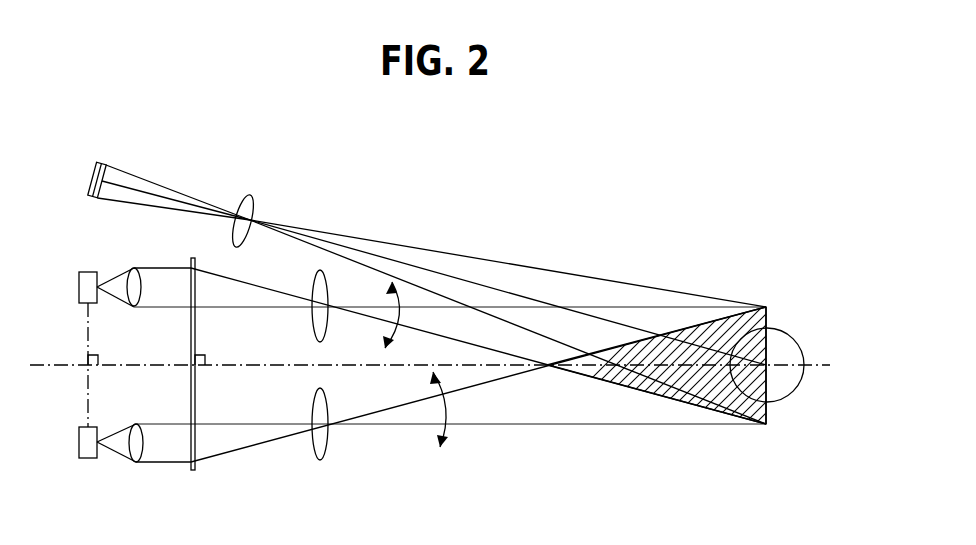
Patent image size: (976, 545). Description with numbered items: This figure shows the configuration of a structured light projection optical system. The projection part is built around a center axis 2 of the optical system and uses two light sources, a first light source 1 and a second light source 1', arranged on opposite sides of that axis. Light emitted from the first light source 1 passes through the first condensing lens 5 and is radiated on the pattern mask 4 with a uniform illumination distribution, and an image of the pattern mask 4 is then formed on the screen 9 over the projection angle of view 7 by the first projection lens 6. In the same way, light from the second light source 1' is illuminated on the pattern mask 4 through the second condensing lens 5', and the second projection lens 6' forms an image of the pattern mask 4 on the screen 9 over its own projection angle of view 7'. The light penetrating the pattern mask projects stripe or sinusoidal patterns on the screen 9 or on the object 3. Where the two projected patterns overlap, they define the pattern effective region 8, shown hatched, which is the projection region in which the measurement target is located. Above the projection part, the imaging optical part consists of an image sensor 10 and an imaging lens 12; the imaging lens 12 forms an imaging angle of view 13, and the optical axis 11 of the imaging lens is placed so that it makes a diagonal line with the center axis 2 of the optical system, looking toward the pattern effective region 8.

The first light source 1 is at (88, 325).
The second light source 1' is at (88, 468).
The center axis 2 is at (50, 365).
The object 3 is at (795, 343).
The pattern mask 4 is at (190, 260).
The first condensing lens 5 is at (431, 261).
The second condensing lens 5' is at (431, 471).
The first projection lens 6 is at (478, 336).
The second projection lens 6' is at (478, 411).
The projection angle of view 7 is at (421, 315).
The projection angle of view 7' is at (451, 409).
The pattern effective region 8 is at (683, 340).
The screen 9 is at (770, 310).
The image sensor 10 is at (90, 184).
The optical axis of the imaging lens 11 is at (480, 287).
The imaging lens 12 is at (250, 197).
The imaging angle of view 13 is at (350, 238).